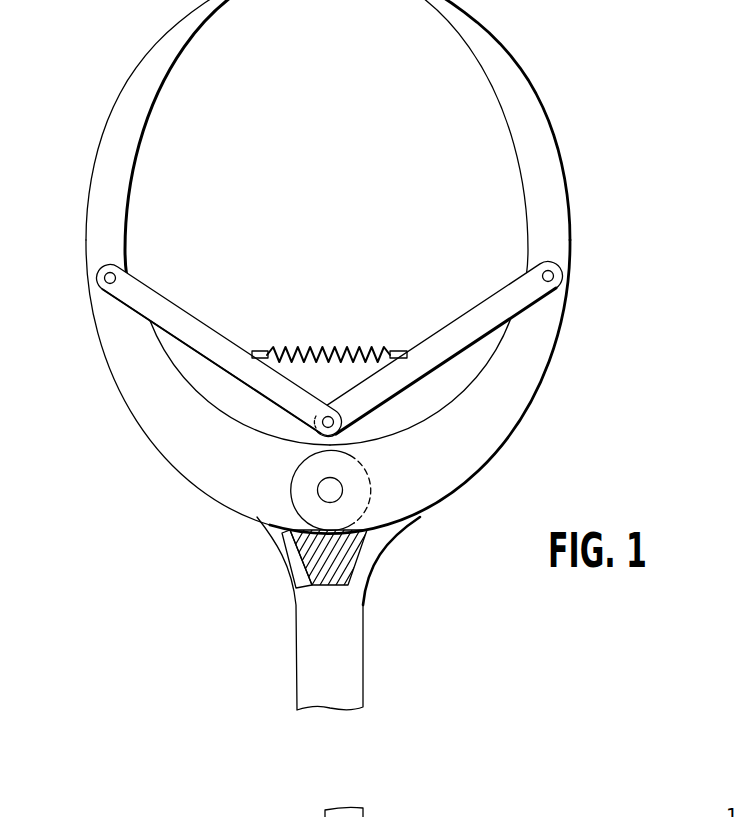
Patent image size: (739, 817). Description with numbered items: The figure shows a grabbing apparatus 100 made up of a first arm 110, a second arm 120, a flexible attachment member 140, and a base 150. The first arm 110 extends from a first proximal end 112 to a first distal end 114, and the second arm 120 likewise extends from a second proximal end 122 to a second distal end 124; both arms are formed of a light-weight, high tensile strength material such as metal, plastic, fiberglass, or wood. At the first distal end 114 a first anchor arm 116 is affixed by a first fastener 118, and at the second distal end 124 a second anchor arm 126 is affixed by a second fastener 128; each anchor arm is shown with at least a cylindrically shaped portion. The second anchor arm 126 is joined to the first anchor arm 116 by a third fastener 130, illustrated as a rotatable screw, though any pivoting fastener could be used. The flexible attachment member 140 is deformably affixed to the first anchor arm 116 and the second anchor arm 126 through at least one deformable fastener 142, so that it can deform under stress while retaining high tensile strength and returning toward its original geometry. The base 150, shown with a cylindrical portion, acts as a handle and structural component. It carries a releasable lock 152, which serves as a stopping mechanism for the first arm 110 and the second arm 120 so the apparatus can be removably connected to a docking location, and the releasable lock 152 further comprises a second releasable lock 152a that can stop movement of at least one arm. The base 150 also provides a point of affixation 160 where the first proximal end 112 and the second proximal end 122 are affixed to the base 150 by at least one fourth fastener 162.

The grabbing apparatus 100 is at (626, 76).
The first arm 110 is at (161, 45).
The first proximal end 112 is at (222, 456).
The first distal end 114 is at (103, 227).
The first anchor arm 116 is at (190, 330).
The first fastener 118 is at (82, 290).
The second arm 120 is at (535, 97).
The second proximal end 122 is at (418, 475).
The second distal end 124 is at (548, 215).
The second anchor arm 126 is at (480, 318).
The second fastener 128 is at (542, 274).
The third fastener 130 is at (326, 416).
The flexible attachment member 140 is at (323, 346).
The deformable fastener 142 is at (258, 352).
The base 150 is at (343, 678).
The releasable lock 152 is at (298, 550).
The second releasable lock 152a is at (318, 572).
The point of affixation 160 is at (337, 535).
The fourth fastener 162 is at (320, 488).